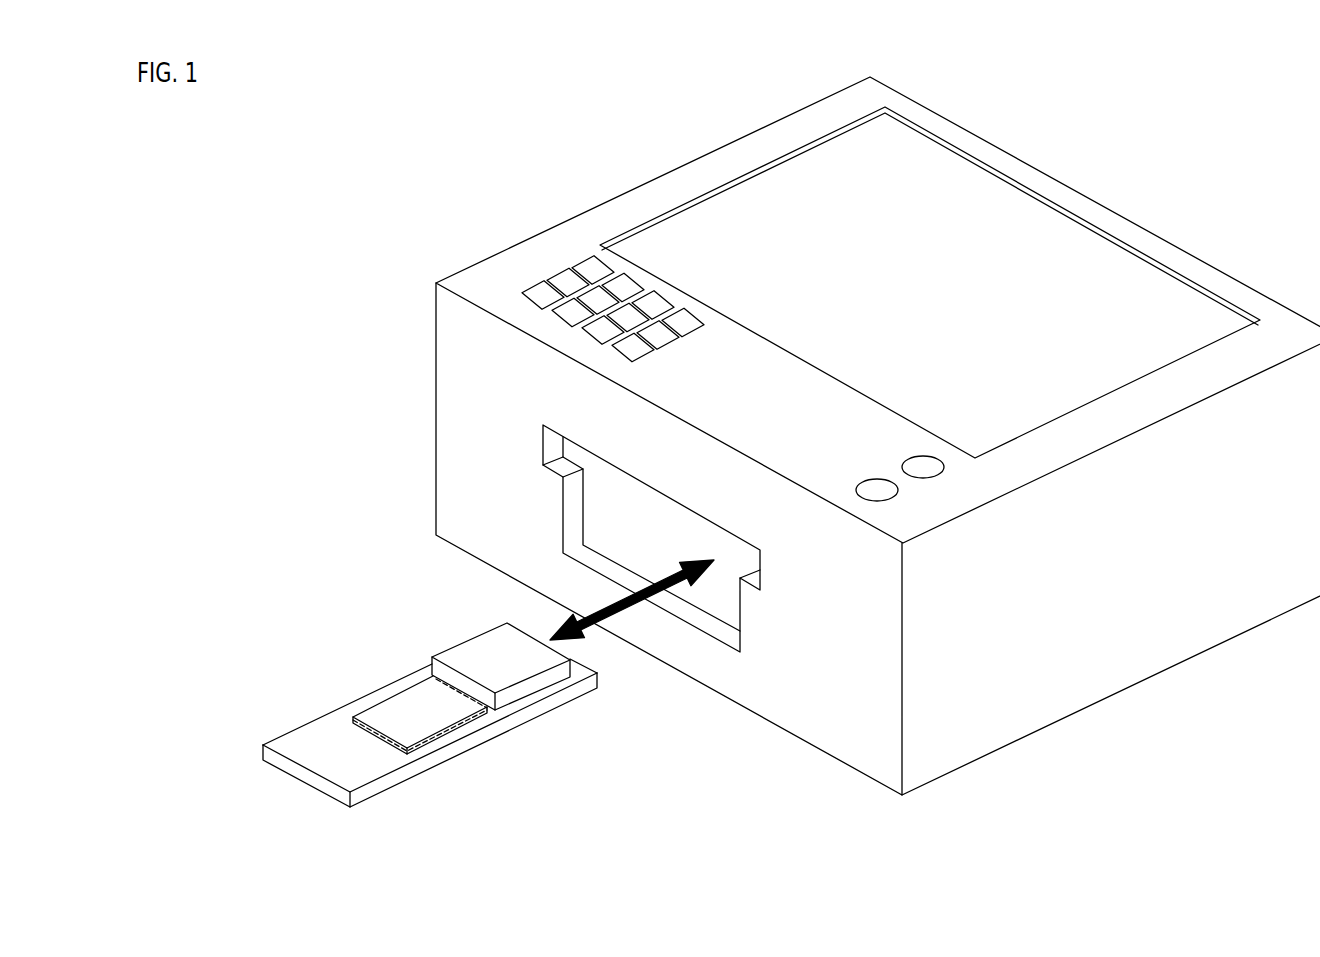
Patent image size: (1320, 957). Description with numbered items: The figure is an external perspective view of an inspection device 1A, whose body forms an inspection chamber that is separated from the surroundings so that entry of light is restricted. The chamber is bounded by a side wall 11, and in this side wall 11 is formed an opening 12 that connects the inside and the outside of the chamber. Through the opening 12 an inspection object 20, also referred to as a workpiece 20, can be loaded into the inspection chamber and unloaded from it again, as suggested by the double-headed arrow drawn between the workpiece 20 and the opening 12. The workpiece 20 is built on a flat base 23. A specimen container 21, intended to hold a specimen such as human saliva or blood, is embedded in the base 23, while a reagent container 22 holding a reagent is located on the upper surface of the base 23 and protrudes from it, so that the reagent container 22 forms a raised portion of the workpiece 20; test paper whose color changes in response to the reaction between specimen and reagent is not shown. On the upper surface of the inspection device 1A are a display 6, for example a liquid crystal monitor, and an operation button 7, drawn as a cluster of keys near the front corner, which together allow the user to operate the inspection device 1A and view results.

The inspection device 1A is at (297, 149).
The display 6 is at (773, 183).
The operation button 7 is at (583, 263).
The side wall 11 is at (457, 369).
The opening 12 is at (722, 607).
The inspection object 20 is at (476, 715).
The specimen container 21 is at (413, 697).
The reagent container 22 is at (485, 648).
The base 23 is at (388, 787).